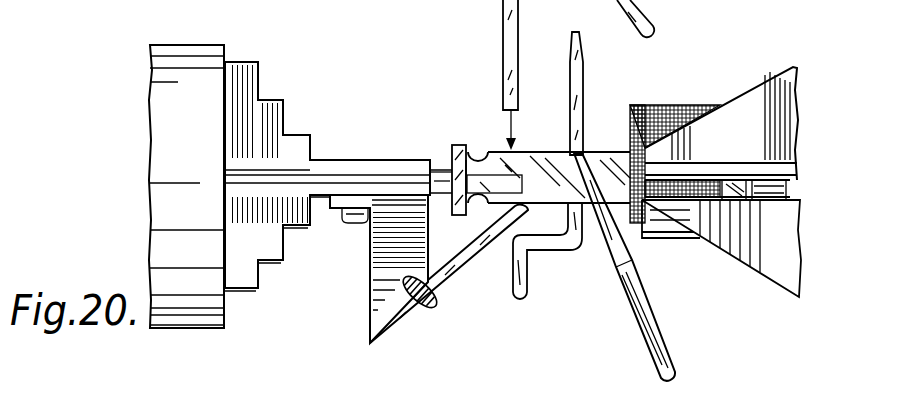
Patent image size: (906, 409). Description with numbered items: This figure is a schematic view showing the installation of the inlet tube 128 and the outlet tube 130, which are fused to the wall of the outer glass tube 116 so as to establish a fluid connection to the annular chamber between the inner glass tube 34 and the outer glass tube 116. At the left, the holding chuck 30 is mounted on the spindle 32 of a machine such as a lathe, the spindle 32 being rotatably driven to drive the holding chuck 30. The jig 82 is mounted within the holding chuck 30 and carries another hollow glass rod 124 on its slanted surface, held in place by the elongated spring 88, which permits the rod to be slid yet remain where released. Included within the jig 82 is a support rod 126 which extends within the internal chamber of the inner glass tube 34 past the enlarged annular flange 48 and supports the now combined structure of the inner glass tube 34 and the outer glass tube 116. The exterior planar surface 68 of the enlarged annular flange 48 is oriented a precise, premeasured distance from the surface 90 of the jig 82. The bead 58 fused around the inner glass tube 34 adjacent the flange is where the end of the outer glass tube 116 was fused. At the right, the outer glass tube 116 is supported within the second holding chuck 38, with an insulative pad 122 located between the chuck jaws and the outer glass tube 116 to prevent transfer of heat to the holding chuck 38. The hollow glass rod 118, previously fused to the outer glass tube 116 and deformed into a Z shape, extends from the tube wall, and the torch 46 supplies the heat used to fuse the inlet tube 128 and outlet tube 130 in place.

The holding chuck 30 is at (276, 80).
The spindle 32 is at (165, 110).
The inner glass tube 34 is at (552, 151).
The second holding chuck 38 is at (768, 62).
The torch 46 is at (653, 320).
The enlarged annular flange 48 is at (453, 145).
The bead 58 is at (490, 150).
The exterior planar surface 68 is at (446, 160).
The jig 82 is at (370, 292).
The elongated spring 88 is at (430, 310).
The surface 90 is at (443, 240).
The outer glass tube 116 is at (613, 151).
The hollow glass rod 118 is at (535, 255).
The insulative pad 122 is at (672, 105).
The hollow glass rod 124 is at (455, 272).
The support rod 126 is at (444, 168).
The inlet tube 128 is at (585, 70).
The outlet tube 130 is at (503, 15).